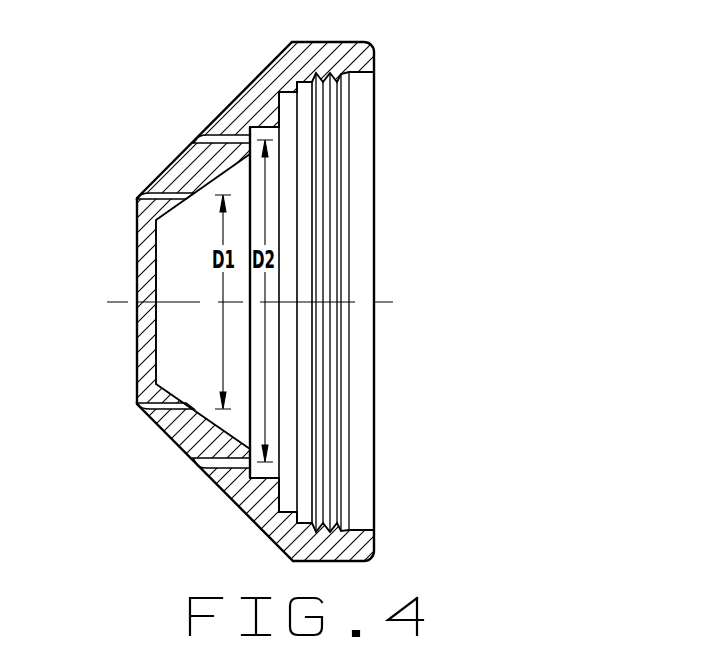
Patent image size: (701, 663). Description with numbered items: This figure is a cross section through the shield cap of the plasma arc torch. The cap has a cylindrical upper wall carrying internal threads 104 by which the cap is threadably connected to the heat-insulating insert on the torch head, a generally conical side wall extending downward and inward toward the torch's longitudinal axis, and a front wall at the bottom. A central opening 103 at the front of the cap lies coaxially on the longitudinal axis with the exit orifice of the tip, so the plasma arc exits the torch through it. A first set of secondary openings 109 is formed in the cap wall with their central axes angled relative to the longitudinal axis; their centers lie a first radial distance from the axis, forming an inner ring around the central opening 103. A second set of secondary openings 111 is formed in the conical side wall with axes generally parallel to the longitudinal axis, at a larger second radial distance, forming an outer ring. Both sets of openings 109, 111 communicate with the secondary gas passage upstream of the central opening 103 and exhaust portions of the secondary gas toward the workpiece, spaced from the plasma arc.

The central opening 103 is at (139, 279).
The internal threads 104 is at (350, 331).
The first set of secondary openings 109 is at (158, 194).
The second set of secondary openings 111 is at (206, 138).